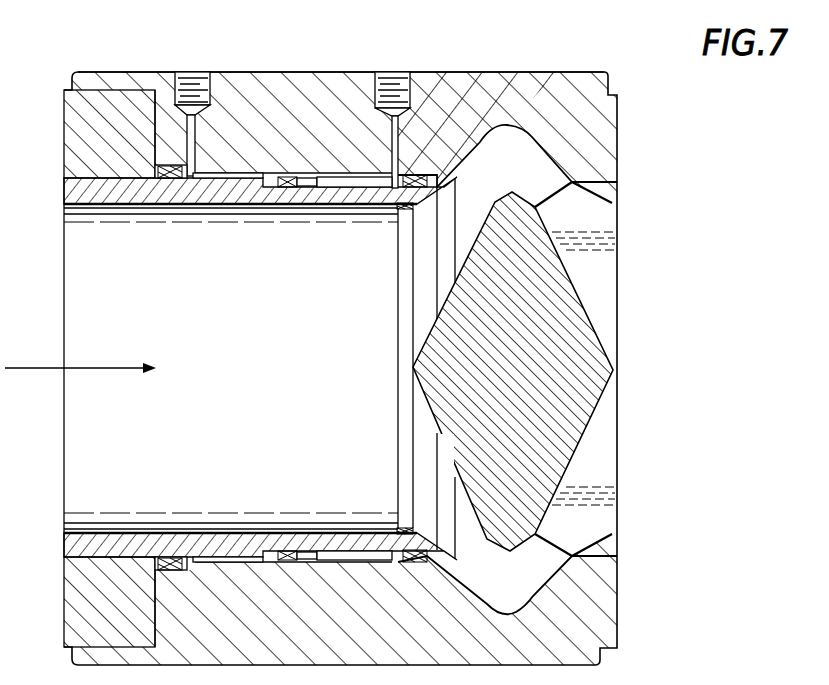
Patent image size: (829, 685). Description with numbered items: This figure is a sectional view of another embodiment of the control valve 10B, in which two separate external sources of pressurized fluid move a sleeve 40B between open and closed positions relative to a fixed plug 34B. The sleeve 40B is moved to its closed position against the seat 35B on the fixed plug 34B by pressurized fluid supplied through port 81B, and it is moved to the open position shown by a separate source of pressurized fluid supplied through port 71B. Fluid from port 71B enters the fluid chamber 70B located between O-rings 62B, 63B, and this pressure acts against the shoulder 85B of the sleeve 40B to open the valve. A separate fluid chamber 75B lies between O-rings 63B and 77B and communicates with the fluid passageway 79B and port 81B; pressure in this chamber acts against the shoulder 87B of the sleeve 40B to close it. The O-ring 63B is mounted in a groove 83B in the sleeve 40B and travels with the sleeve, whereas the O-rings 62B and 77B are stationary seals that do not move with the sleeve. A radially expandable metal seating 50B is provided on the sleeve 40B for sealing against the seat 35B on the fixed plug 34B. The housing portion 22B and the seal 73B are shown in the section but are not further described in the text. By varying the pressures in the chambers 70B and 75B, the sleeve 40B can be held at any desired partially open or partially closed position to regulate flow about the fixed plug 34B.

The control valve 10B is at (499, 63).
The valve body 22B is at (596, 129).
The fixed plug 34B is at (438, 365).
The seat 35B is at (490, 198).
The sleeve 40B is at (266, 205).
The radially expandable metal seating 50B is at (403, 530).
The O-ring 62B is at (528, 83).
The O-ring 63B is at (293, 180).
The fluid chamber 70B is at (397, 209).
The port 71B is at (397, 85).
The seal 73B is at (418, 170).
The fluid chamber 75B is at (211, 180).
The O-ring 77B is at (163, 180).
The fluid passageway 79B is at (187, 133).
The port 81B is at (185, 74).
The groove 83B is at (288, 175).
The shoulder 85B is at (300, 190).
The shoulder 87B is at (258, 173).